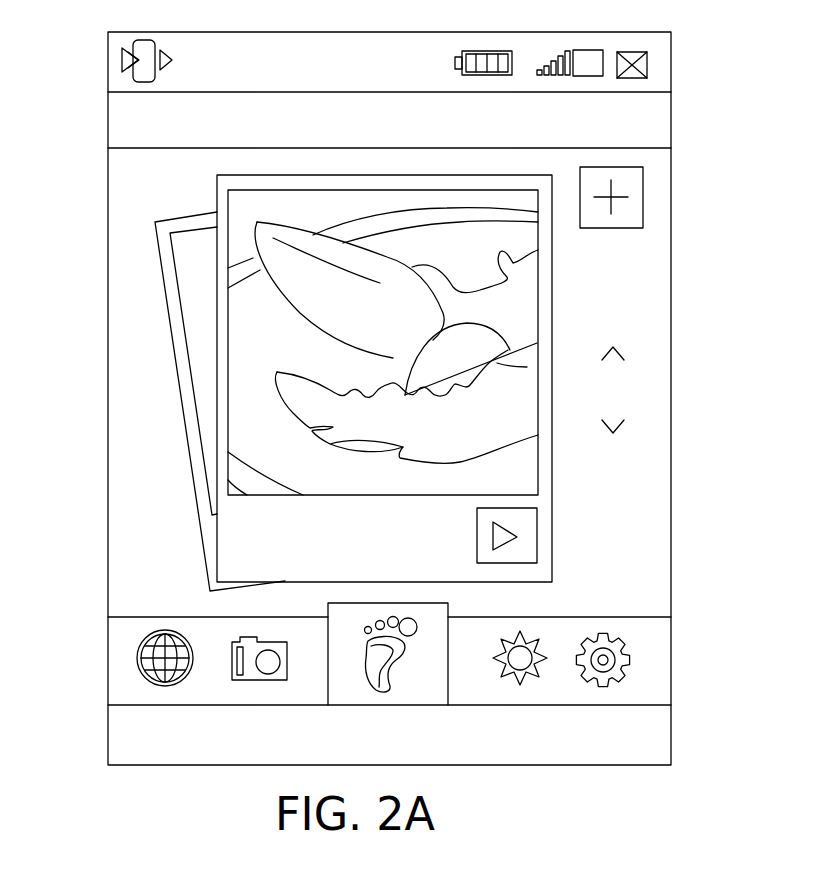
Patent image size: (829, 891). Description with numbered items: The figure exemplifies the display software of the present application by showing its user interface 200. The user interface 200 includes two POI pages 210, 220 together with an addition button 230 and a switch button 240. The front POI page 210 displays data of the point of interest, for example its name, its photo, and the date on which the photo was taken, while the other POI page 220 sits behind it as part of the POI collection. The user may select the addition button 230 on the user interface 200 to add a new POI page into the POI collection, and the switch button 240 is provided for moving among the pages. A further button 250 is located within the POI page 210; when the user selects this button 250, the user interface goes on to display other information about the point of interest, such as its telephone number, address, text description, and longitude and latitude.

The user interface 200 is at (671, 178).
The POI page 210 is at (552, 292).
The POI page 220 is at (170, 292).
The addition button 230 is at (643, 207).
The switch button 240 is at (635, 395).
The button 250 is at (537, 540).